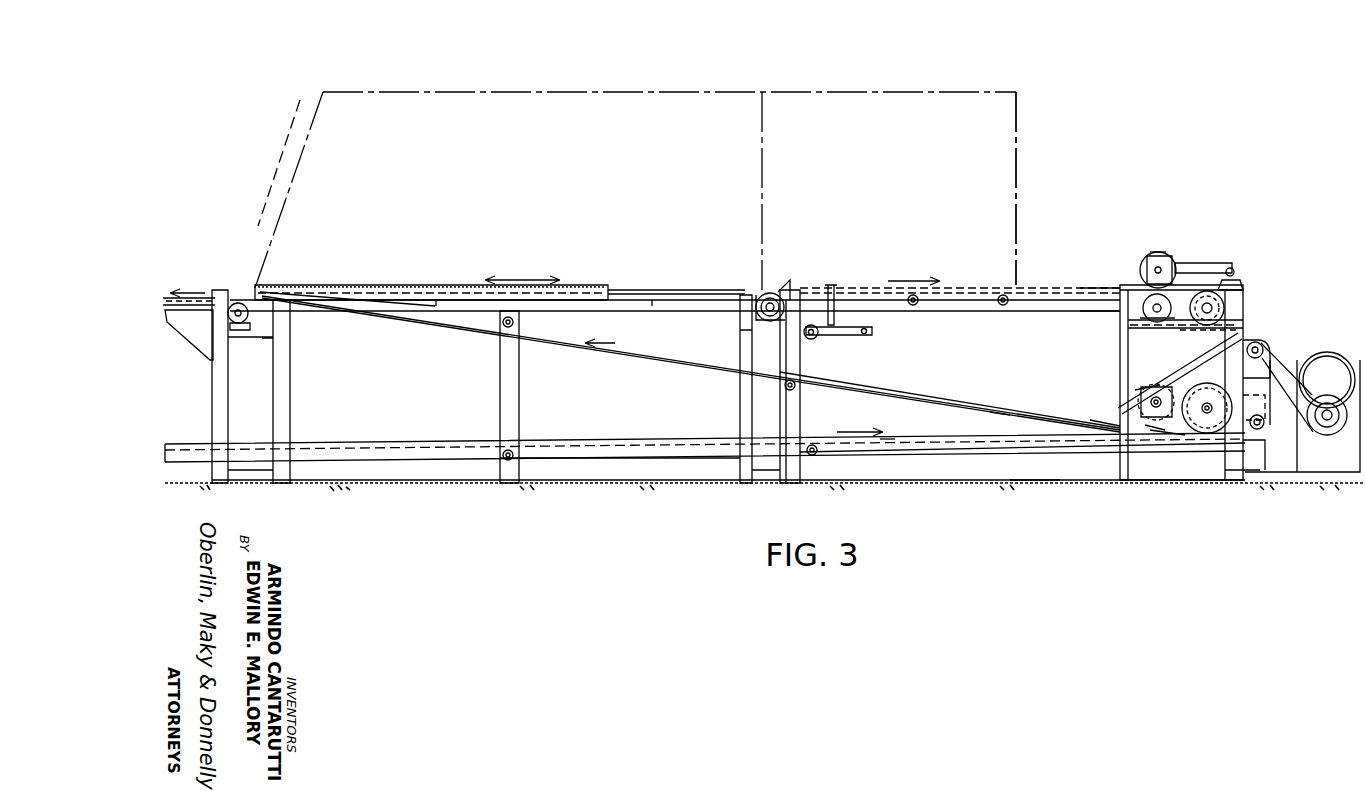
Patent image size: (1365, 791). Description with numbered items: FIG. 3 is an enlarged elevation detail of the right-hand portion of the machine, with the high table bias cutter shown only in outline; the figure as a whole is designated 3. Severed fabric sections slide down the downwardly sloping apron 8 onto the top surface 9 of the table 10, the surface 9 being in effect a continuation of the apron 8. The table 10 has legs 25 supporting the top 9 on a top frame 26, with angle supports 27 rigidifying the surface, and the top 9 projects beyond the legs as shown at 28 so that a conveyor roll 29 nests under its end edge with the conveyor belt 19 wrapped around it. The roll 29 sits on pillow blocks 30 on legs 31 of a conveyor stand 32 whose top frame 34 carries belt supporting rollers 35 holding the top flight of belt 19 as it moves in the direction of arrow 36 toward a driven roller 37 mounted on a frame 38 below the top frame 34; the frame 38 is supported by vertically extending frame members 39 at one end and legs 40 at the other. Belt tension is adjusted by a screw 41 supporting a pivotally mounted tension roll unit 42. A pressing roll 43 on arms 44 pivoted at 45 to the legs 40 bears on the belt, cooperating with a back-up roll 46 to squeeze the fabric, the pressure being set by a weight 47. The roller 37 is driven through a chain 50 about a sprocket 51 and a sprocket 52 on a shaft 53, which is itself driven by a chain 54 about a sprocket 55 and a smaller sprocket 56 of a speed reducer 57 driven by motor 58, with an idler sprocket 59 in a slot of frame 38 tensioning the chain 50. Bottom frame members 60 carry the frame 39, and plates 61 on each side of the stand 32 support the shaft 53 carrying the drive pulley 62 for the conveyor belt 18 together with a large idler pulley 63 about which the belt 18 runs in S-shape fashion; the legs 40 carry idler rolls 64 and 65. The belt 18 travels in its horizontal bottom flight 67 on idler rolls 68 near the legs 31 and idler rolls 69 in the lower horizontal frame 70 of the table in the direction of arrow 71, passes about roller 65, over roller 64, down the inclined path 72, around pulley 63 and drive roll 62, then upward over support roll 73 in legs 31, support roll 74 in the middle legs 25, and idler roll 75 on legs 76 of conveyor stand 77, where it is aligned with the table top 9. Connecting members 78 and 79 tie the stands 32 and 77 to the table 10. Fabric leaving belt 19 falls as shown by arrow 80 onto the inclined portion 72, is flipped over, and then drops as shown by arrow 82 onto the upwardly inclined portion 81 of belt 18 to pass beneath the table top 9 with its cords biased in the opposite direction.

The conveyor unloader assembly 3 is at (309, 65).
The apron 8 is at (312, 205).
The top surface of table 9 is at (697, 285).
The table 10 is at (444, 470).
The conveyor belt 18 is at (208, 290).
The conveyor belt 19 is at (1100, 320).
The legs 25 is at (290, 415).
The top frame 26 is at (615, 300).
The angle supports 27 is at (440, 306).
The projection of table top 28 is at (758, 296).
The conveyor roll 29 is at (768, 320).
The pillow blocks 30 is at (776, 310).
The legs of conveyor stand 31 is at (800, 367).
The conveyor stand 32 is at (974, 462).
The top frame of stand 34 is at (1032, 290).
The belt supporting rollers 35 is at (998, 305).
The arrow 36 is at (912, 281).
The driven roller 37 is at (1225, 305).
The frame 38 is at (1000, 324).
The vertically extending frame members 39 is at (1120, 365).
The legs 40 is at (1232, 460).
The screw 41 is at (836, 296).
The tension roll unit 42 is at (820, 336).
The pressing roll 43 is at (1162, 262).
The arms 44 is at (1205, 268).
The pivot 45 is at (1235, 272).
The back-up roll 46 is at (1150, 300).
The weight 47 is at (1152, 258).
The chain 50 is at (1200, 352).
The sprocket 51 is at (1225, 312).
The sprocket 52 is at (1265, 380).
The shaft 53 is at (1205, 435).
The chain 54 is at (1272, 425).
The sprocket 55 is at (1208, 432).
The smaller sprocket 56 is at (1328, 438).
The speed reducer 57 is at (1318, 440).
The motor 58 is at (1330, 355).
The idler sprocket 59 is at (1180, 340).
The bottom horizontally extending frame members 60 is at (1030, 450).
The plates 61 is at (1145, 430).
The drive pulley 62 is at (1158, 418).
The idler pulley 63 is at (1160, 425).
The idler roll 64 is at (1262, 345).
The idler roll 65 is at (1256, 430).
The horizontal bottom flight 67 is at (887, 445).
The idler rolls 68 is at (815, 458).
The idler rolls 69 is at (508, 462).
The lower horizontal frame 70 is at (620, 455).
The arrow 71 is at (860, 428).
The downwardly inclined path 72 is at (1145, 395).
The support roll 73 is at (795, 388).
The support roll 74 is at (505, 328).
The idler roll 75 is at (245, 330).
The legs 76 is at (212, 405).
The conveyor stand 77 is at (206, 475).
The connecting member 78 is at (262, 342).
The connecting member 79 is at (262, 470).
The arrow 80 is at (1235, 325).
The upwardly inclined portion 81 is at (1000, 412).
The arrow 82 is at (1090, 420).